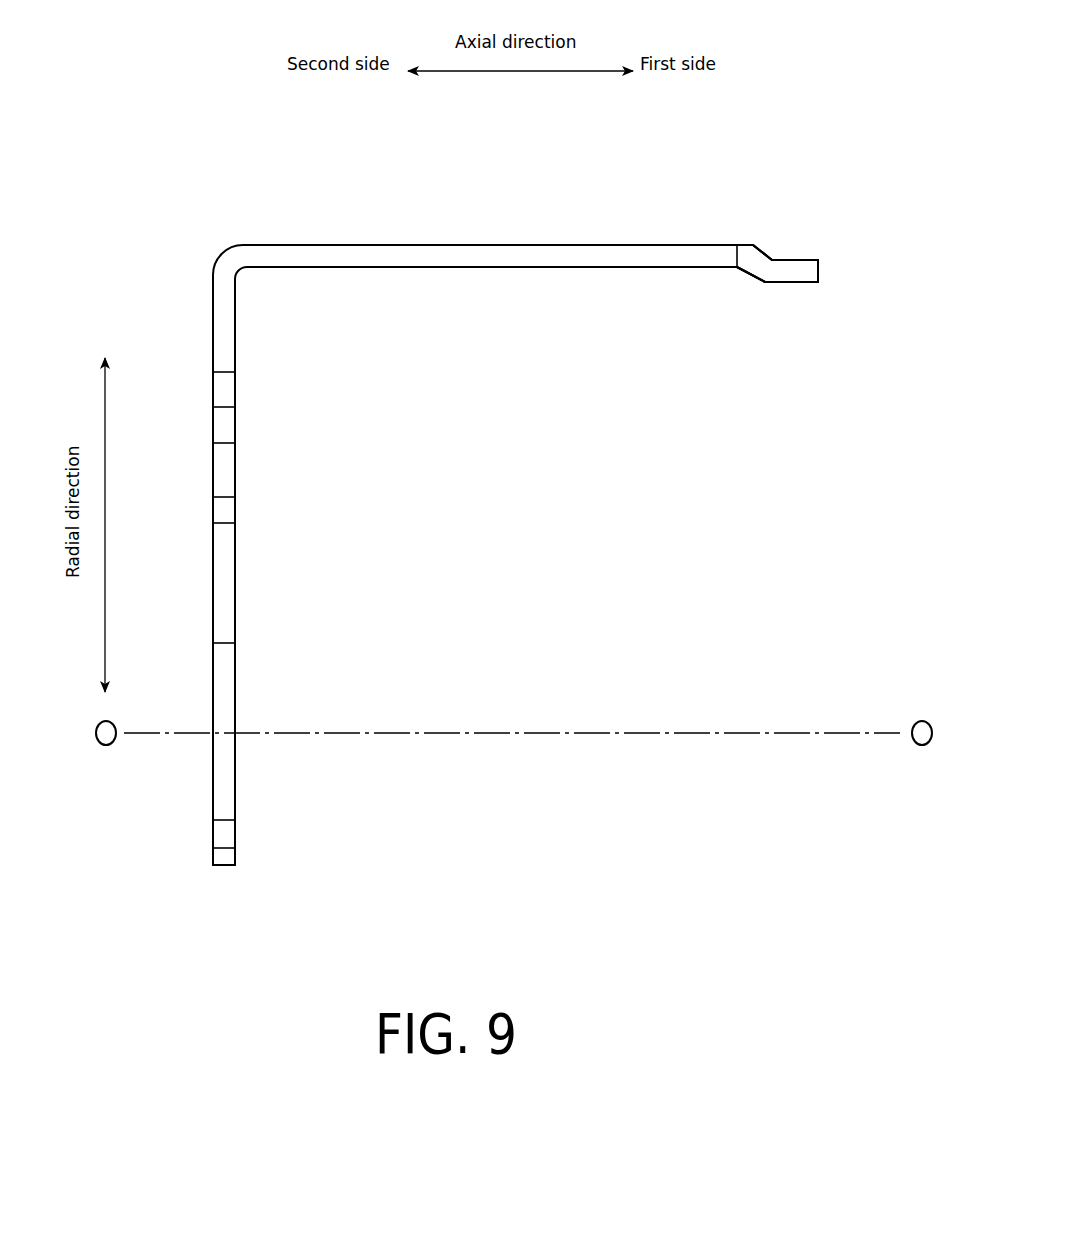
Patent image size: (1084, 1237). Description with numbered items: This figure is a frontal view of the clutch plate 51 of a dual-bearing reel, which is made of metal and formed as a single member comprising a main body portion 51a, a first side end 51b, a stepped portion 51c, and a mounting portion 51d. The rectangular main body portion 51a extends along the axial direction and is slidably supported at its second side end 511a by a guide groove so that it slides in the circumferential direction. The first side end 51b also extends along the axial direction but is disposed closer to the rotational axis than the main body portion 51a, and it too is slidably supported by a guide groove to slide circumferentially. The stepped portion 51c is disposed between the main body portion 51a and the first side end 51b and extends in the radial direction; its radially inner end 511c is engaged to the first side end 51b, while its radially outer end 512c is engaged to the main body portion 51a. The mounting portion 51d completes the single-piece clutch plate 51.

The clutch plate 51 is at (612, 216).
The main body portion 51a is at (455, 272).
The second side end 511a is at (311, 252).
The stepped portion 51c is at (776, 249).
The radially outer end 512c is at (770, 250).
The radially inner end 511c is at (753, 284).
The first side end 51b is at (796, 286).
The mounting portion 51d is at (240, 694).